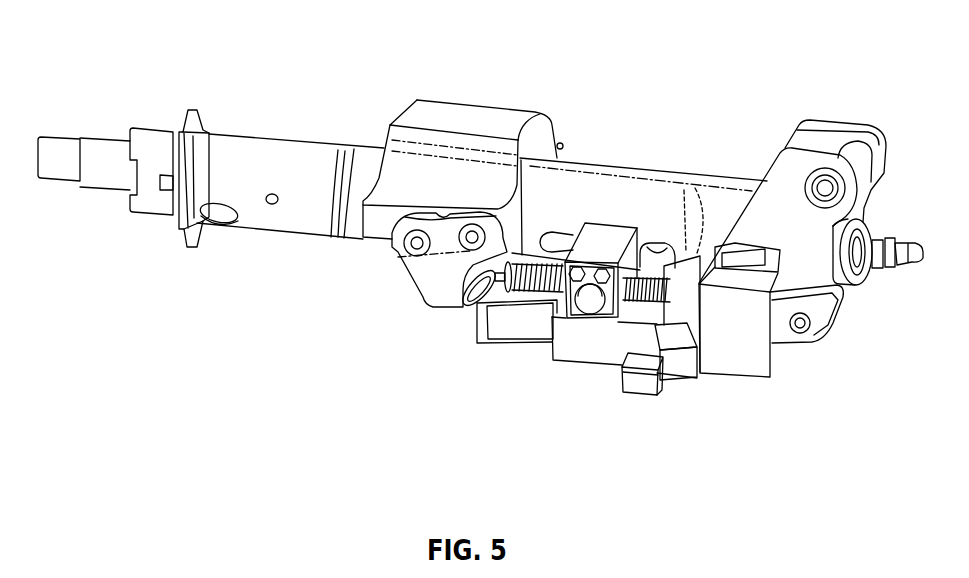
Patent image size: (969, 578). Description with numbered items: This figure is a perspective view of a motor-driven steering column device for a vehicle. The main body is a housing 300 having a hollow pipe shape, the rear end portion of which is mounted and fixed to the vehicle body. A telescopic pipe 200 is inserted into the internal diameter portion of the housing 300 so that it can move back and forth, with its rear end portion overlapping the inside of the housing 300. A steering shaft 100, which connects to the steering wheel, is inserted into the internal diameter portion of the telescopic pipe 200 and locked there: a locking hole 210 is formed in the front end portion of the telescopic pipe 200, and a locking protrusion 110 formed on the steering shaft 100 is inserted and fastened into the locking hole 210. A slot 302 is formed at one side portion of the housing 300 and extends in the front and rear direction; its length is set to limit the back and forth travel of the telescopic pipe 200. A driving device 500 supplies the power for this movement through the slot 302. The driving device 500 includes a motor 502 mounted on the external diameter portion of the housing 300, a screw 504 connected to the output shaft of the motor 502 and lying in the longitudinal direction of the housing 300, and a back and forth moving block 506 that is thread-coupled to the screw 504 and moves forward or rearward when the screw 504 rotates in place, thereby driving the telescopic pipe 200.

The steering shaft 100 is at (107, 148).
The locking protrusion 110 is at (165, 172).
The telescopic pipe 200 is at (232, 143).
The locking hole 210 is at (168, 204).
The housing 300 is at (737, 174).
The slot 302 is at (665, 242).
The driving device 500 is at (666, 412).
The motor 502 is at (703, 310).
The screw 504 is at (623, 301).
The back and forth moving block 506 is at (563, 320).